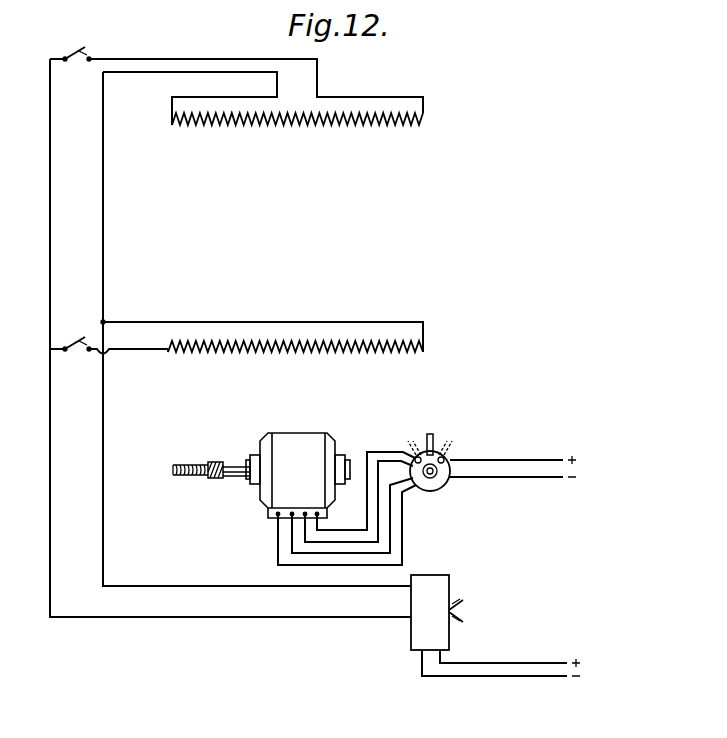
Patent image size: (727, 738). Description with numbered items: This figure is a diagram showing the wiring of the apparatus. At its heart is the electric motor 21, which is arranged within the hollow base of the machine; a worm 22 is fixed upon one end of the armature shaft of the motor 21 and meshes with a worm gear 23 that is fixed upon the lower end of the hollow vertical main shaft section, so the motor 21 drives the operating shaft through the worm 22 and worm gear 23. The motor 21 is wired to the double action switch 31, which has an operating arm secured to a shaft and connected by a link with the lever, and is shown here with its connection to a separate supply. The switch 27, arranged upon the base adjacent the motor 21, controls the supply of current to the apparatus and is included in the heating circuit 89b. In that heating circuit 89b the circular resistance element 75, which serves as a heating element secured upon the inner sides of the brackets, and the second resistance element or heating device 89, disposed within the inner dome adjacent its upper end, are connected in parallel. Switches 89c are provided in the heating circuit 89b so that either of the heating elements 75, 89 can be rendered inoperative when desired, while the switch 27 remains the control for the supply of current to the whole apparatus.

The second resistance element or heating device 89 is at (322, 126).
The heating circuit 89b is at (103, 223).
The switches 89c is at (70, 51).
The circular resistance element 75 is at (300, 347).
The electric motor 21 is at (293, 443).
The worm 22 is at (219, 480).
The worm gear 23 is at (173, 470).
The double action switch 31 is at (433, 486).
The switch 27 is at (425, 583).